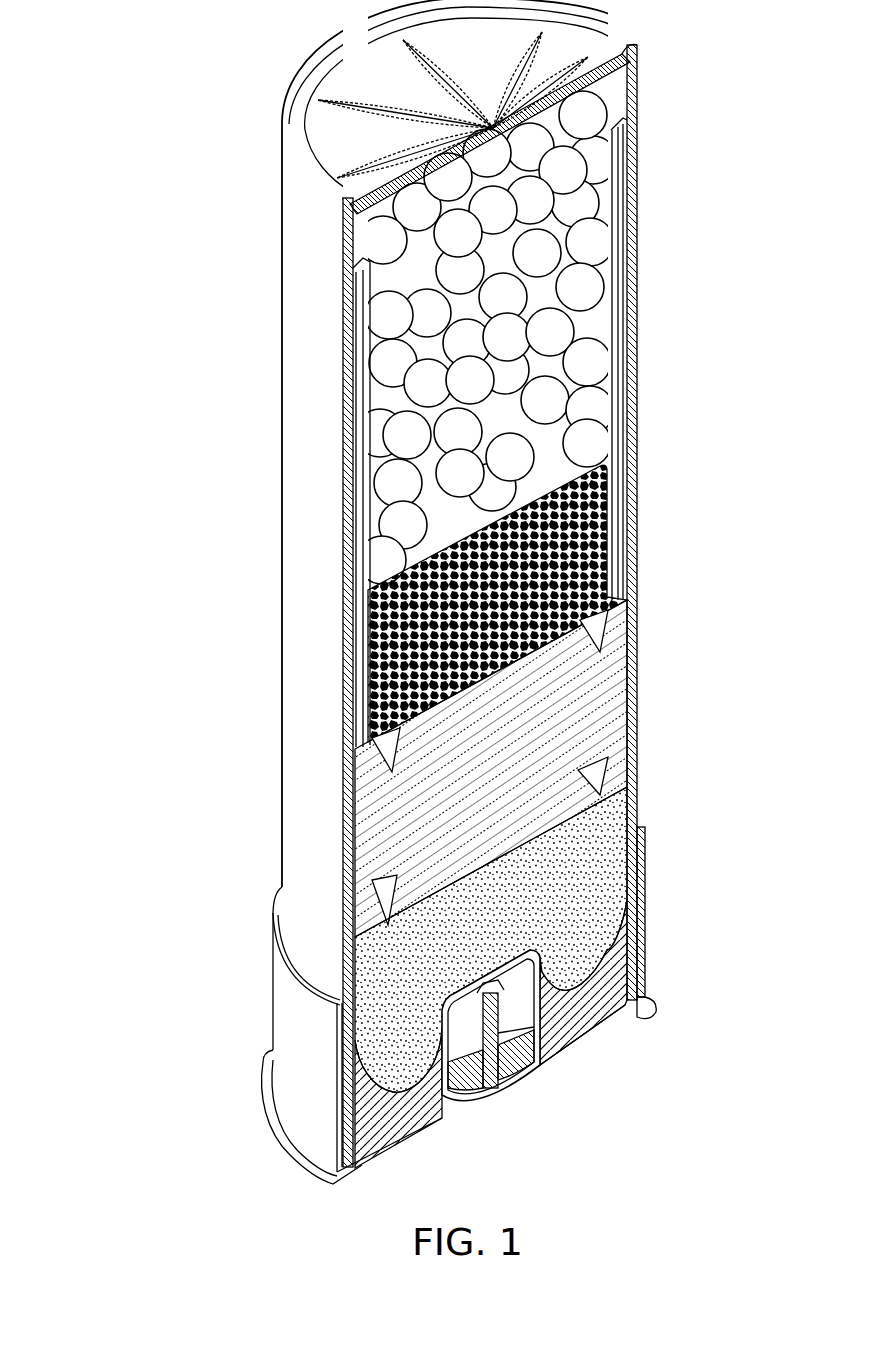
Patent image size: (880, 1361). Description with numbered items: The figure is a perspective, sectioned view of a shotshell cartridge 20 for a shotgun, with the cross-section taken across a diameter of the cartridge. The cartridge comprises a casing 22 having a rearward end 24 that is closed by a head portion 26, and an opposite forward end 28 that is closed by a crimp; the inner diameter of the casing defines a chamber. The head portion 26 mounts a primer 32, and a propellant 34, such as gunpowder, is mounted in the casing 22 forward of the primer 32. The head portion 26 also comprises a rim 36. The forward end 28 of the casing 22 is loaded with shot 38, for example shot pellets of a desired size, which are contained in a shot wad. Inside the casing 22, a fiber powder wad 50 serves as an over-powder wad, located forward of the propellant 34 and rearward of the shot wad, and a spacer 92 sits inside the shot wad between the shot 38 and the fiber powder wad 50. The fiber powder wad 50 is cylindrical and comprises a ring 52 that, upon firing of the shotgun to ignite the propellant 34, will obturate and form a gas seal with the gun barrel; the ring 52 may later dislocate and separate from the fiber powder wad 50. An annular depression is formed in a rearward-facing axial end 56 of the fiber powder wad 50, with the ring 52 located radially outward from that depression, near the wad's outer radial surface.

The shotshell cartridge 20 is at (343, 443).
The casing 22 is at (280, 197).
The rearward end 24 is at (465, 966).
The head portion 26 is at (272, 998).
The forward end 28 is at (660, 100).
The primer 32 is at (483, 1106).
The propellant 34 is at (460, 939).
The rim 36 is at (288, 1147).
The shot 38 is at (388, 316).
The fiber powder wad 50 is at (636, 678).
The ring 52 is at (627, 798).
The rearward-facing axial end 56 is at (600, 882).
The spacer 92 is at (614, 462).